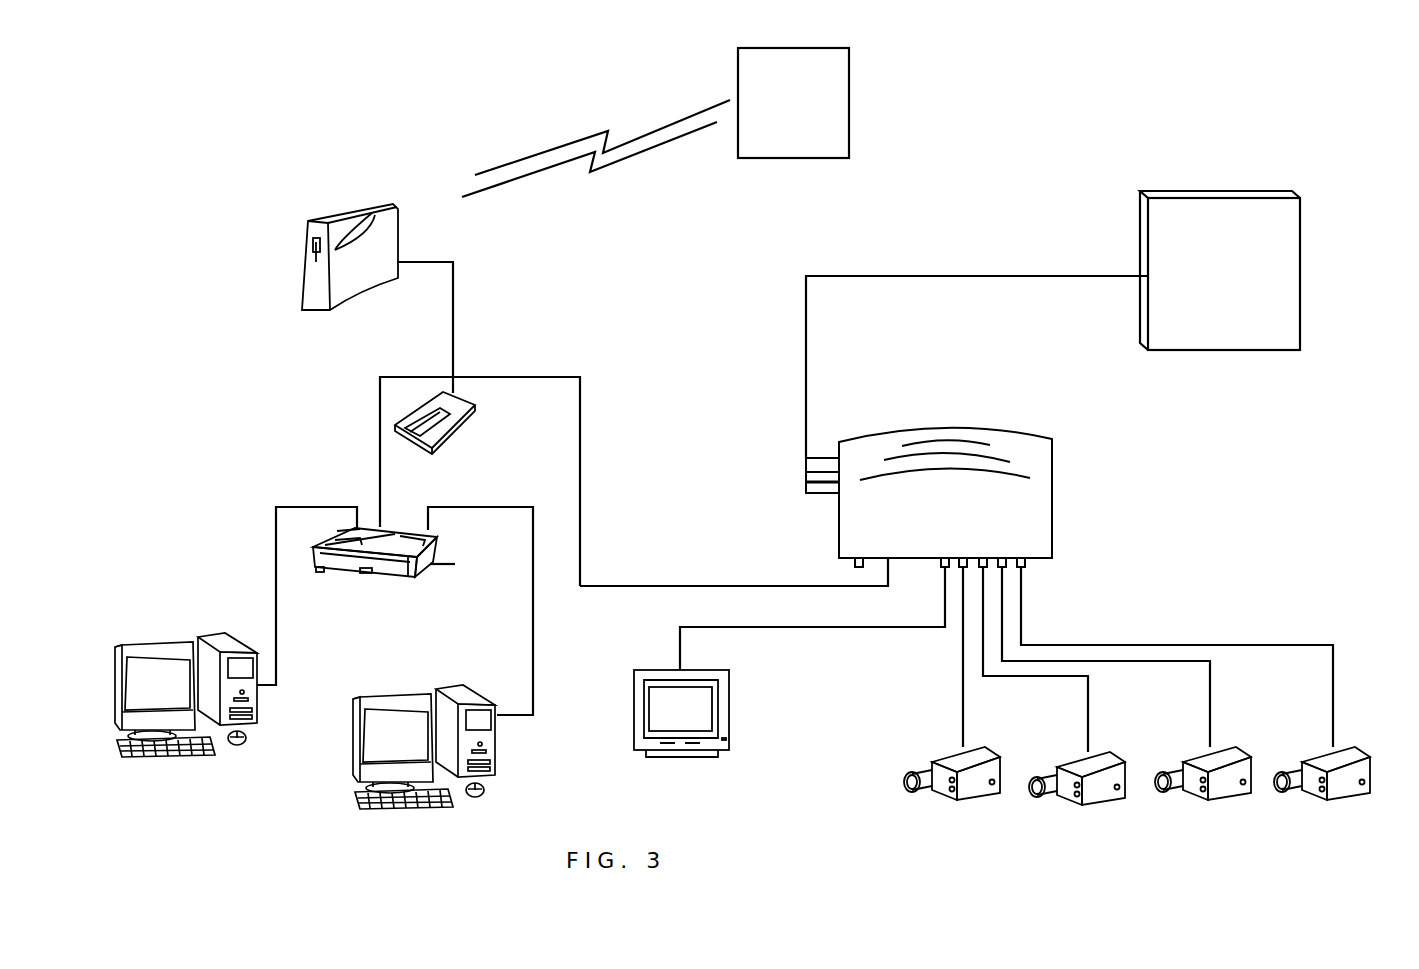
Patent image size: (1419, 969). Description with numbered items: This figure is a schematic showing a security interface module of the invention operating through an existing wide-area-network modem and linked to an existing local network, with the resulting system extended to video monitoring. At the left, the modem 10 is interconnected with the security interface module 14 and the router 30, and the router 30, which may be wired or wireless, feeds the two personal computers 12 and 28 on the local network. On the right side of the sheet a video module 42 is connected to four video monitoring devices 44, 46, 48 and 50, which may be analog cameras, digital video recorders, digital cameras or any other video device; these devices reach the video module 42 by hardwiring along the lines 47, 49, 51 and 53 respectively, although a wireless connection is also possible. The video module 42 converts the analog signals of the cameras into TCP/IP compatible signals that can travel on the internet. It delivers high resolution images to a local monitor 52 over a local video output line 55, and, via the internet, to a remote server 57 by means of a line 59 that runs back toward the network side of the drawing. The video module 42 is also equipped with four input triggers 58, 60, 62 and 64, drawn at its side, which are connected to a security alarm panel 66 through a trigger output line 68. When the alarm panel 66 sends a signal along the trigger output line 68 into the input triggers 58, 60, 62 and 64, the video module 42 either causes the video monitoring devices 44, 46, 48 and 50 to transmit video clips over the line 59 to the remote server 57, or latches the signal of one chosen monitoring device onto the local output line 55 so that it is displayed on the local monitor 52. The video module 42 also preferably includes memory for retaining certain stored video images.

The modem 10 is at (345, 210).
The personal computer 12 is at (498, 762).
The security interface module 14 is at (478, 412).
The personal computer 28 is at (258, 712).
The router 30 is at (430, 577).
The video module 42 is at (1055, 473).
The video monitoring device 44 is at (958, 810).
The video monitoring device 46 is at (1090, 813).
The line 47 is at (960, 657).
The video monitoring device 48 is at (1222, 805).
The line 49 is at (996, 678).
The video monitoring device 50 is at (1340, 805).
The line 51 is at (1112, 665).
The local monitor 52 is at (730, 728).
The line 53 is at (1245, 648).
The local video output line 55 is at (843, 630).
The remote server 57 is at (850, 105).
The input trigger 58 is at (826, 466).
The line 59 is at (598, 584).
The input trigger 60 is at (812, 458).
The input trigger 62 is at (814, 480).
The input trigger 64 is at (830, 490).
The security alarm panel 66 is at (1215, 190).
The trigger output line 68 is at (903, 274).